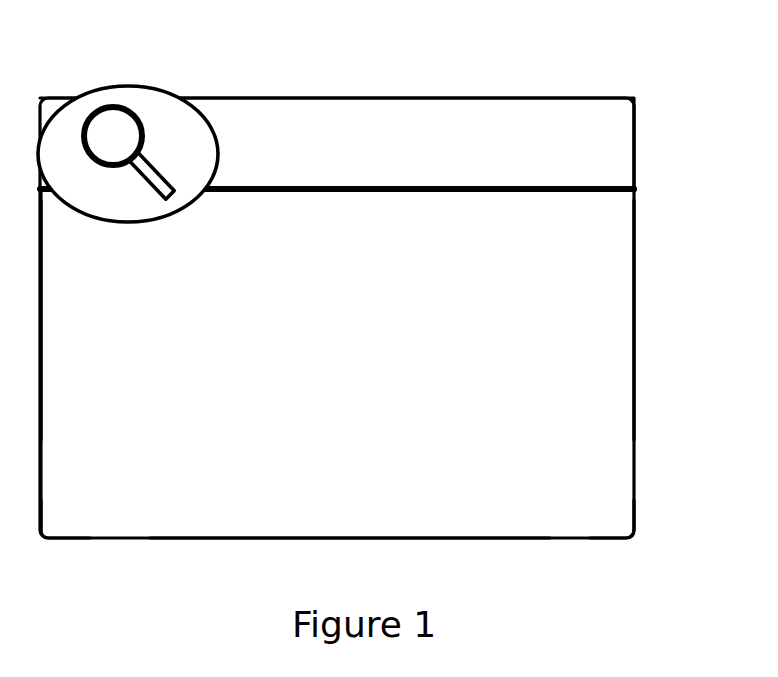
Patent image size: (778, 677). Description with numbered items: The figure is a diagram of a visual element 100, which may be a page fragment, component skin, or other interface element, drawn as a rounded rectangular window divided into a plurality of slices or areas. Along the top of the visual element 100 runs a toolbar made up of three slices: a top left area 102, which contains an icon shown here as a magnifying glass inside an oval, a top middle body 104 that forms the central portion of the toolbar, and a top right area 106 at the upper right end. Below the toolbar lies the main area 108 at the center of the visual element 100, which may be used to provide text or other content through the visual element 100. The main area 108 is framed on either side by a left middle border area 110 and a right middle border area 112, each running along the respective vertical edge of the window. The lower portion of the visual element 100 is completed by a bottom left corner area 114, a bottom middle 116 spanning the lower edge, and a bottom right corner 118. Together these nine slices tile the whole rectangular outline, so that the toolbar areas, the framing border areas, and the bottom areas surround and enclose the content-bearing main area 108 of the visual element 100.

The visual element 100 is at (470, 102).
The top left area 102 is at (156, 130).
The top middle body 104 is at (388, 145).
The top right area 106 is at (600, 158).
The main area 108 is at (360, 341).
The left middle border area 110 is at (44, 366).
The right middle border area 112 is at (633, 333).
The bottom left corner area 114 is at (44, 530).
The bottom middle 116 is at (332, 545).
The bottom right corner 118 is at (630, 537).